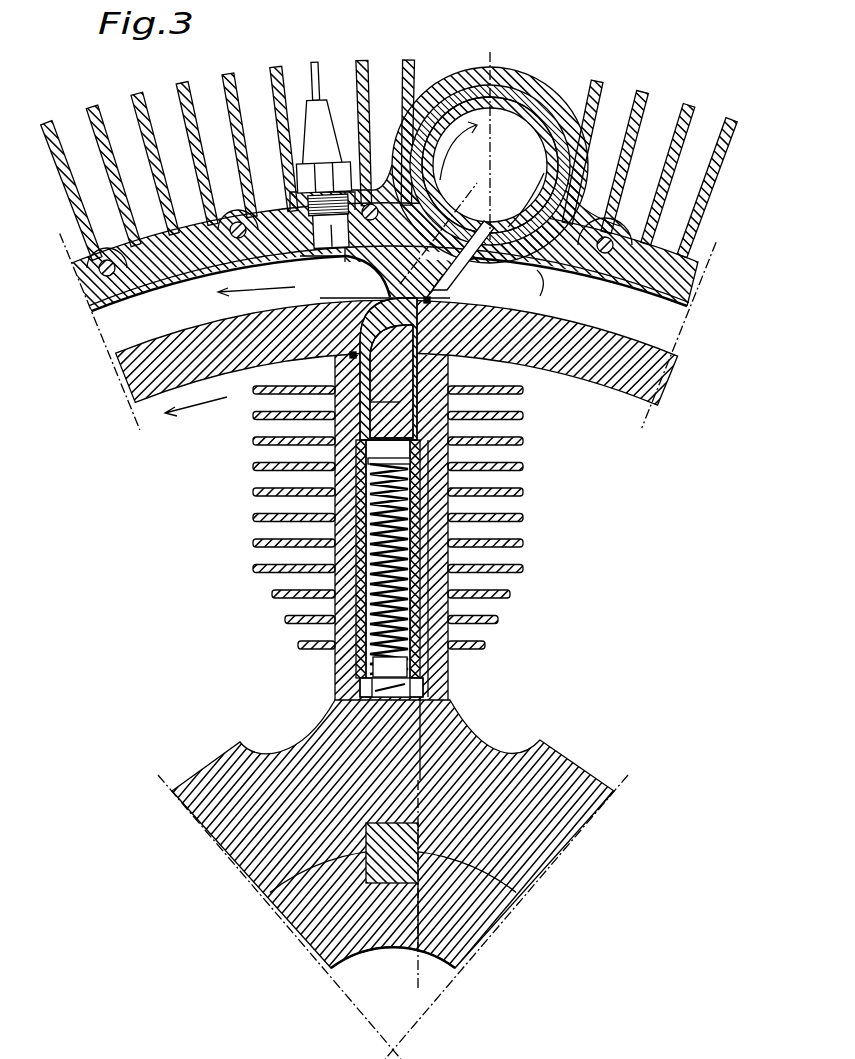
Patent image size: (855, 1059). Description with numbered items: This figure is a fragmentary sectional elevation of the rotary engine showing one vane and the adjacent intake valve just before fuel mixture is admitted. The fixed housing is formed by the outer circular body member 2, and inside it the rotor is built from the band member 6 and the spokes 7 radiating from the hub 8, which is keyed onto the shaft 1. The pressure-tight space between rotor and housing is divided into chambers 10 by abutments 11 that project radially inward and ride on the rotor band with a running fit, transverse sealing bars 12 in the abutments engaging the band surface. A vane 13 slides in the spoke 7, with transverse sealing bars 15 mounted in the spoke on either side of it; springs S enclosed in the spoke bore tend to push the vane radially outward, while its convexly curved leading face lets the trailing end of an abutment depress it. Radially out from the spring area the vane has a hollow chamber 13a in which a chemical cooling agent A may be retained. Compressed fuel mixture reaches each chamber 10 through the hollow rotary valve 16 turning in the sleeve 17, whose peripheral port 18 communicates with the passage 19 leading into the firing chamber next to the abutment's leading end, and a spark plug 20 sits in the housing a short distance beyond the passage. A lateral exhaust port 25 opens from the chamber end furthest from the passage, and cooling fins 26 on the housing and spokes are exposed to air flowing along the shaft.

The shaft 1 is at (330, 928).
The outer circular body member 2 is at (152, 253).
The band member 6 is at (108, 420).
The spokes 7 is at (452, 530).
The hub 8 is at (478, 777).
The chambers 10 is at (125, 355).
The abutments 11 is at (387, 251).
The transverse sealing bars 12 is at (403, 329).
The vanes 13 is at (347, 406).
The hollow chamber 13a is at (460, 374).
The transverse sealing bars 15 is at (350, 360).
The hollow rotary valve 16 is at (547, 157).
The sleeve 17 is at (533, 120).
The port 18 is at (508, 227).
The passage 19 is at (428, 216).
The spark plug 20 is at (330, 228).
The lateral exhaust port 25 is at (529, 288).
The cooling fins 26 is at (290, 72).
The chemical cooling agent A is at (400, 402).
The springs S is at (375, 645).